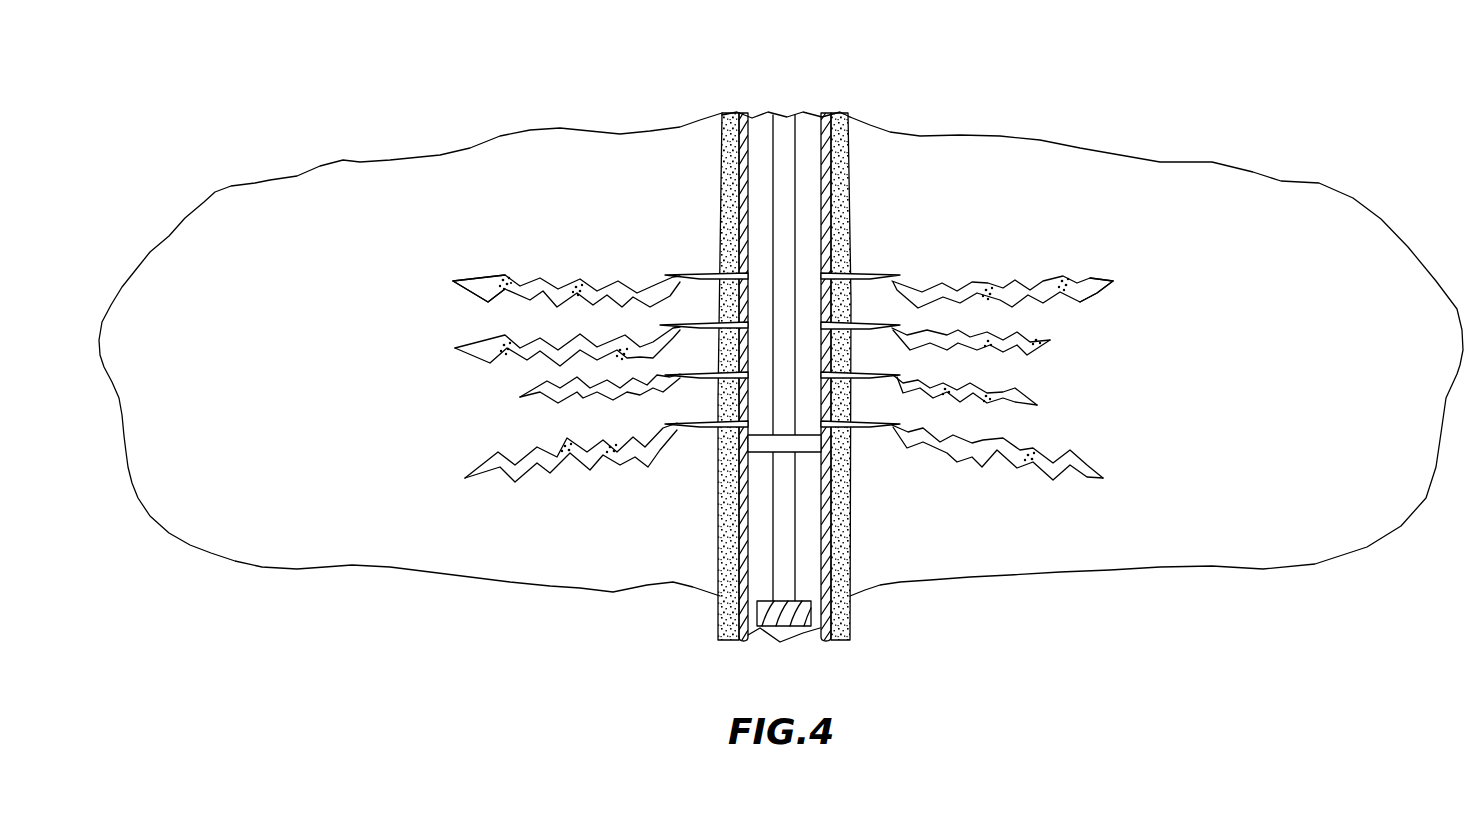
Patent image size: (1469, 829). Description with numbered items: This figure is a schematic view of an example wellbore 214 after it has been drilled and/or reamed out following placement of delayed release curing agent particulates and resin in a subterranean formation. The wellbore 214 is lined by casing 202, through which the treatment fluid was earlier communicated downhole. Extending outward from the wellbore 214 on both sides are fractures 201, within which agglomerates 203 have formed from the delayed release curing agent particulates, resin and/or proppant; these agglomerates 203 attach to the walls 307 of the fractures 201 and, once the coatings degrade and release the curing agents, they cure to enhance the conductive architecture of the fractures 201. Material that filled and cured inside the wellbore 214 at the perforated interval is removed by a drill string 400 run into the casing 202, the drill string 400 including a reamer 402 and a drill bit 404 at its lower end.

The fractures 201 is at (933, 283).
The casing 202 is at (722, 142).
The agglomerates 203 is at (577, 280).
The wellbore 214 is at (731, 112).
The walls 307 is at (470, 280).
The drill string 400 is at (801, 130).
The reamer 402 is at (808, 455).
The drill bit 404 is at (757, 611).